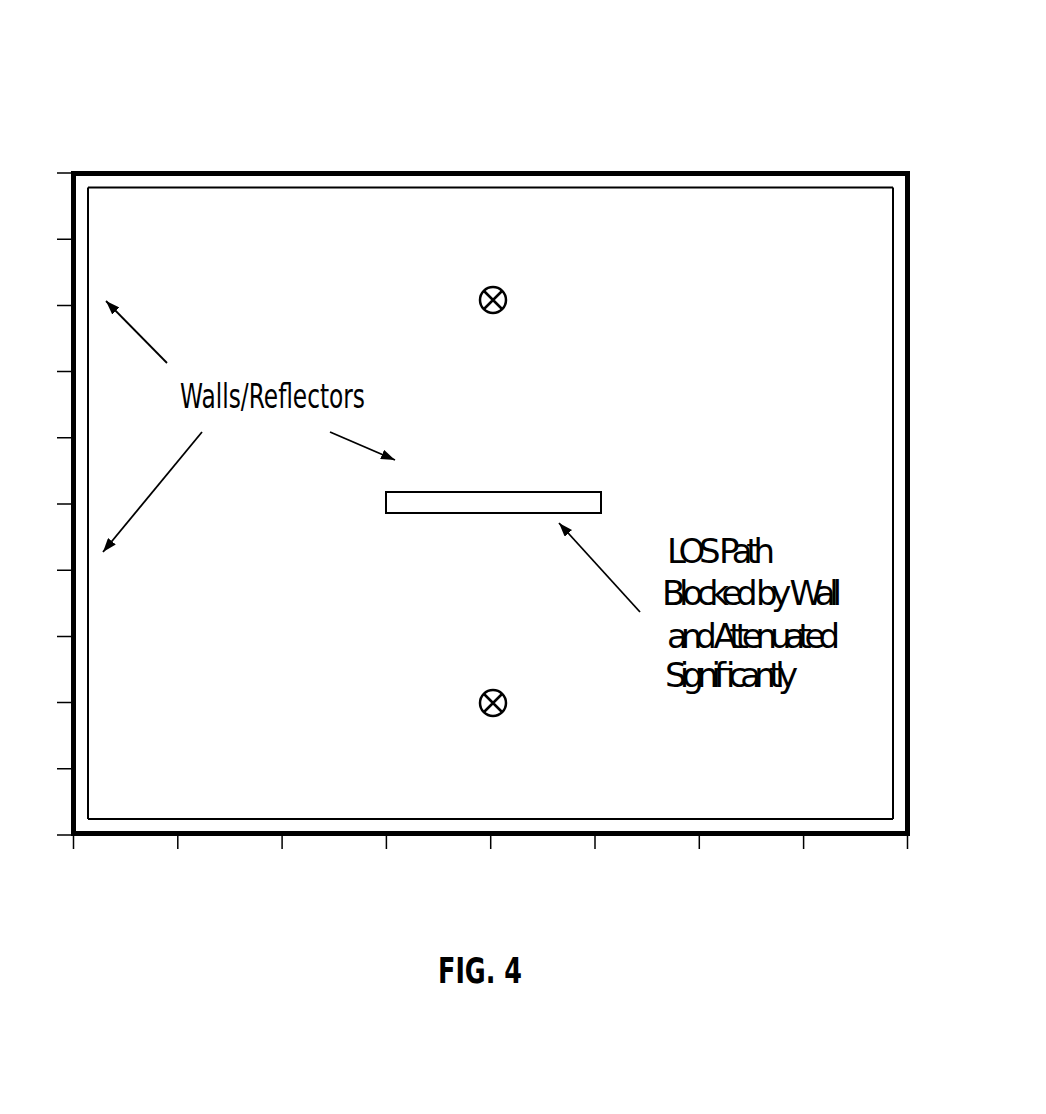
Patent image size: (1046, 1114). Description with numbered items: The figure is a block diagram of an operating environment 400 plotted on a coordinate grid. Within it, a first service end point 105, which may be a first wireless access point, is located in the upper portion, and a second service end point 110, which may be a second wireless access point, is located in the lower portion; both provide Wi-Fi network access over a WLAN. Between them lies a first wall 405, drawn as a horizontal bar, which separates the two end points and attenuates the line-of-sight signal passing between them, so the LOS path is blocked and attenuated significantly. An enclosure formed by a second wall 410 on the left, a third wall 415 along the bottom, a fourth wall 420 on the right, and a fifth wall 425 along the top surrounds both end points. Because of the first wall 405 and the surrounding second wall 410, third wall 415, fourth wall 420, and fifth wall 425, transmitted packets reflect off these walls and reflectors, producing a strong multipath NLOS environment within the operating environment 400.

The operating environment 400 is at (76, 76).
The first service end point 105 is at (494, 287).
The second service end point 110 is at (493, 690).
The first wall 405 is at (510, 478).
The second wall 410 is at (88, 737).
The third wall 415 is at (340, 818).
The fourth wall 420 is at (893, 455).
The fifth wall 425 is at (640, 188).